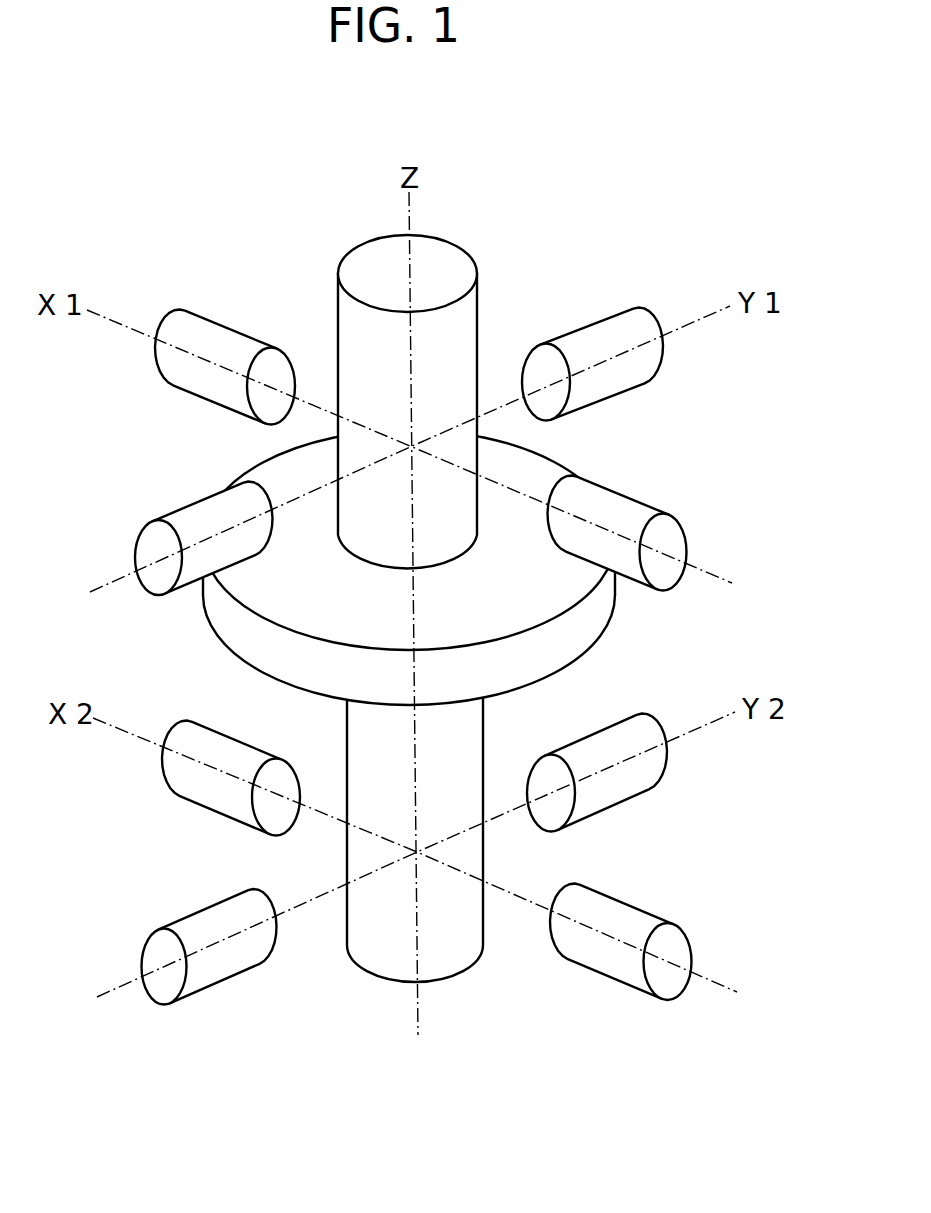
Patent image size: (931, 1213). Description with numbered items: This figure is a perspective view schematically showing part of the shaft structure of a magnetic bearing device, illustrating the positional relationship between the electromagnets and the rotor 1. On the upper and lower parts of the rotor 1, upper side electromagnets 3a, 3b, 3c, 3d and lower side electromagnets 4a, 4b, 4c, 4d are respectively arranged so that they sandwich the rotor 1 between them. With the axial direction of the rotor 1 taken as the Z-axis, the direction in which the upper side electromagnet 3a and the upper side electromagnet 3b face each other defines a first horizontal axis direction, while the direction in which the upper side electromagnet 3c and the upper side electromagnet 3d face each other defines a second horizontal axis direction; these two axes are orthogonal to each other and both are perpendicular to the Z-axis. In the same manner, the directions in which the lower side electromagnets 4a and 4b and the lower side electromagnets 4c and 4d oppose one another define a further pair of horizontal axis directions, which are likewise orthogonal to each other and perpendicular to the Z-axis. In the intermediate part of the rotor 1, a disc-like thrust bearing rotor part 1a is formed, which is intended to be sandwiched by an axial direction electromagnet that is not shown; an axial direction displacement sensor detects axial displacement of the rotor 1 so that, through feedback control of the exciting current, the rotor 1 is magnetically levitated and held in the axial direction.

The rotor 1 is at (453, 253).
The thrust bearing rotor part 1a is at (580, 630).
The upper side electromagnet 3a is at (202, 328).
The upper side electromagnet 3b is at (638, 510).
The upper side electromagnet 3c is at (180, 513).
The upper side electromagnet 3d is at (602, 325).
The lower side electromagnet 4a is at (180, 782).
The lower side electromagnet 4b is at (680, 938).
The lower side electromagnet 4c is at (190, 925).
The lower side electromagnet 4d is at (650, 773).